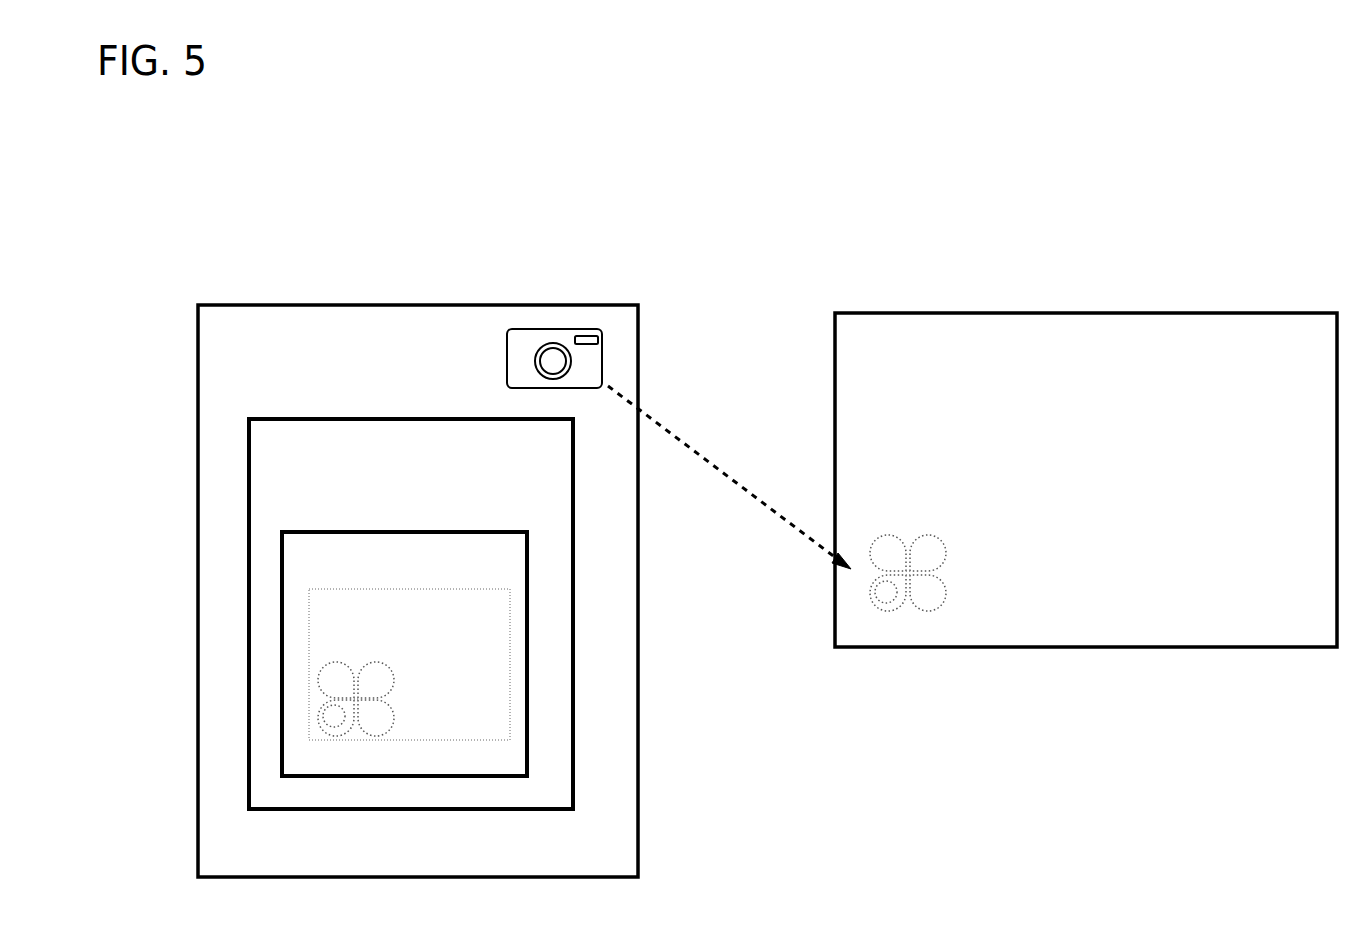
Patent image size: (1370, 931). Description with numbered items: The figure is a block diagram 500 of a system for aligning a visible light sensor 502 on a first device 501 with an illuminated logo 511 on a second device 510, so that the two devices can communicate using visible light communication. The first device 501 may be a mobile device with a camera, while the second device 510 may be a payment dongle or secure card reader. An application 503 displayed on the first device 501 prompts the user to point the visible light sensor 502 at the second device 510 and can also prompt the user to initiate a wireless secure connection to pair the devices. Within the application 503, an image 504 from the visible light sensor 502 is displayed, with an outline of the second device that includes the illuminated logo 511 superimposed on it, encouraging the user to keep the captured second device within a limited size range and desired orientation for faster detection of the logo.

The block diagram 500 is at (255, 228).
The first device 501 is at (263, 352).
The visible light sensor 502 is at (608, 348).
The application 503 is at (315, 460).
The image 504 is at (405, 530).
The second device 510 is at (901, 358).
The illuminated logo 511 is at (947, 571).